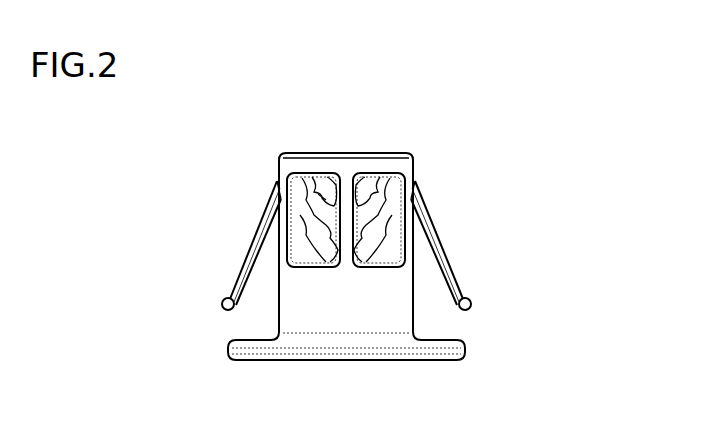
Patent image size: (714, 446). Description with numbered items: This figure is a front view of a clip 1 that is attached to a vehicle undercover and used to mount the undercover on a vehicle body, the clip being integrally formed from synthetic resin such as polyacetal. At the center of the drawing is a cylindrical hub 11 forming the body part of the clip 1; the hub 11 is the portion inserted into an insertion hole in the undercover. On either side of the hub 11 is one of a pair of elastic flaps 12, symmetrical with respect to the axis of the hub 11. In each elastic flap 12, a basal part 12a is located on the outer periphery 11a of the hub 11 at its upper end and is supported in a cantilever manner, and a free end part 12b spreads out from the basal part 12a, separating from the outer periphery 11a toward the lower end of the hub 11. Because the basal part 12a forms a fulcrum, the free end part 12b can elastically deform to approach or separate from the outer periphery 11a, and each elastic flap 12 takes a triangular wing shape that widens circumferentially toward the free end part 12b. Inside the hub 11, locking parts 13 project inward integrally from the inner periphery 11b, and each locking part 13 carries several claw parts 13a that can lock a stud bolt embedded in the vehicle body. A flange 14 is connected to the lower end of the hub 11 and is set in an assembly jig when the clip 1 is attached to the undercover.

The clip 1 is at (537, 76).
The cylindrical hub 11 is at (390, 142).
The outer periphery 11a is at (385, 305).
The inner periphery 11b is at (316, 262).
The elastic flap 12 is at (250, 222).
The basal part 12a is at (277, 178).
The free end part 12b is at (226, 291).
The locking part 13 is at (363, 236).
The claw part 13a is at (344, 270).
The flange 14 is at (447, 355).